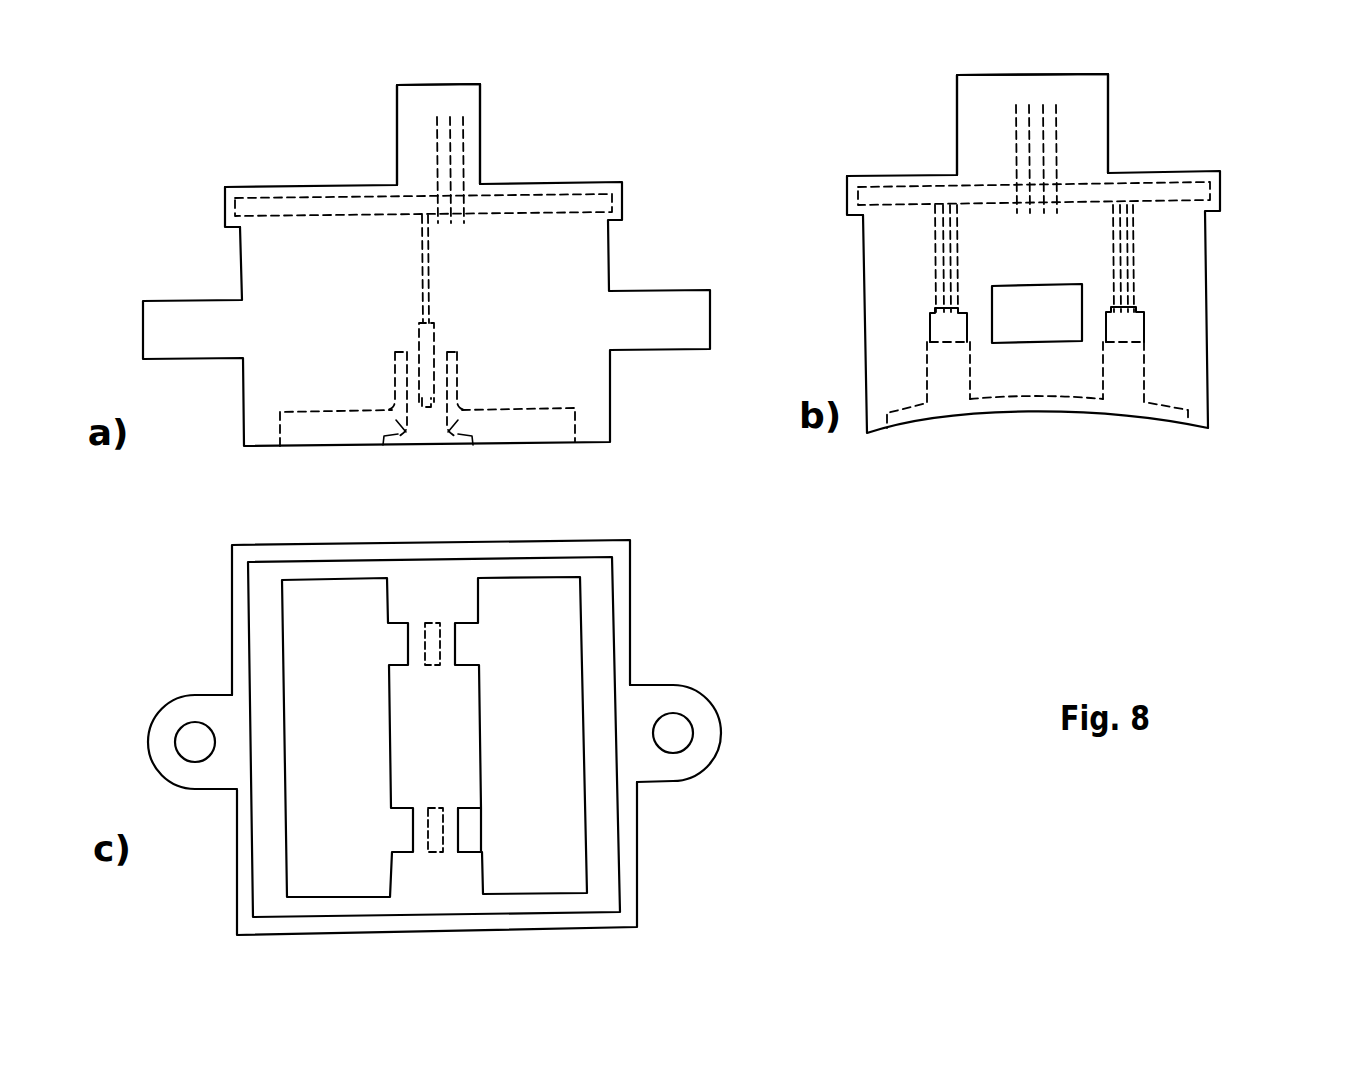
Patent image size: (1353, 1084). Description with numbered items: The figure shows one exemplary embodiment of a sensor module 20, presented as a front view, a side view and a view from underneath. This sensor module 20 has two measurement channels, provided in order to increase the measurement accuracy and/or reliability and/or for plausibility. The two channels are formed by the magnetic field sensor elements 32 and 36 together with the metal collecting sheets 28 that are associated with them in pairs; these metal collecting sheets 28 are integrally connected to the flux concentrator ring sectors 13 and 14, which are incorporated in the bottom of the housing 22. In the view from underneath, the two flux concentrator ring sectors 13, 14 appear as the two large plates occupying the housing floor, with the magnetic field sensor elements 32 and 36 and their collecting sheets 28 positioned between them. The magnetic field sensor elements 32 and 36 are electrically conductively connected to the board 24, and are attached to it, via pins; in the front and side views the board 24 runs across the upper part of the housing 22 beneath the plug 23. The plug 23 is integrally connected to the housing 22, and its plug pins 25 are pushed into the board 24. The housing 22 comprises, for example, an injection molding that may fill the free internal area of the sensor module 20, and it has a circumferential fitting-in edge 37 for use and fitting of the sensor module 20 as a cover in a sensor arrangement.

The flux concentrator ring sector 13 is at (316, 430).
The flux concentrator ring sector 14 is at (538, 428).
The sensor module 20 is at (645, 236).
The housing 22 is at (275, 375).
The plug 23 is at (410, 118).
The board 24 is at (272, 206).
The plug pins 25 is at (464, 133).
The metal collecting sheets 28 is at (402, 425).
The magnetic field sensor element 32 is at (427, 402).
The magnetic field sensor element 36 is at (1130, 322).
The circumferential fitting-in edge 37 is at (226, 236).